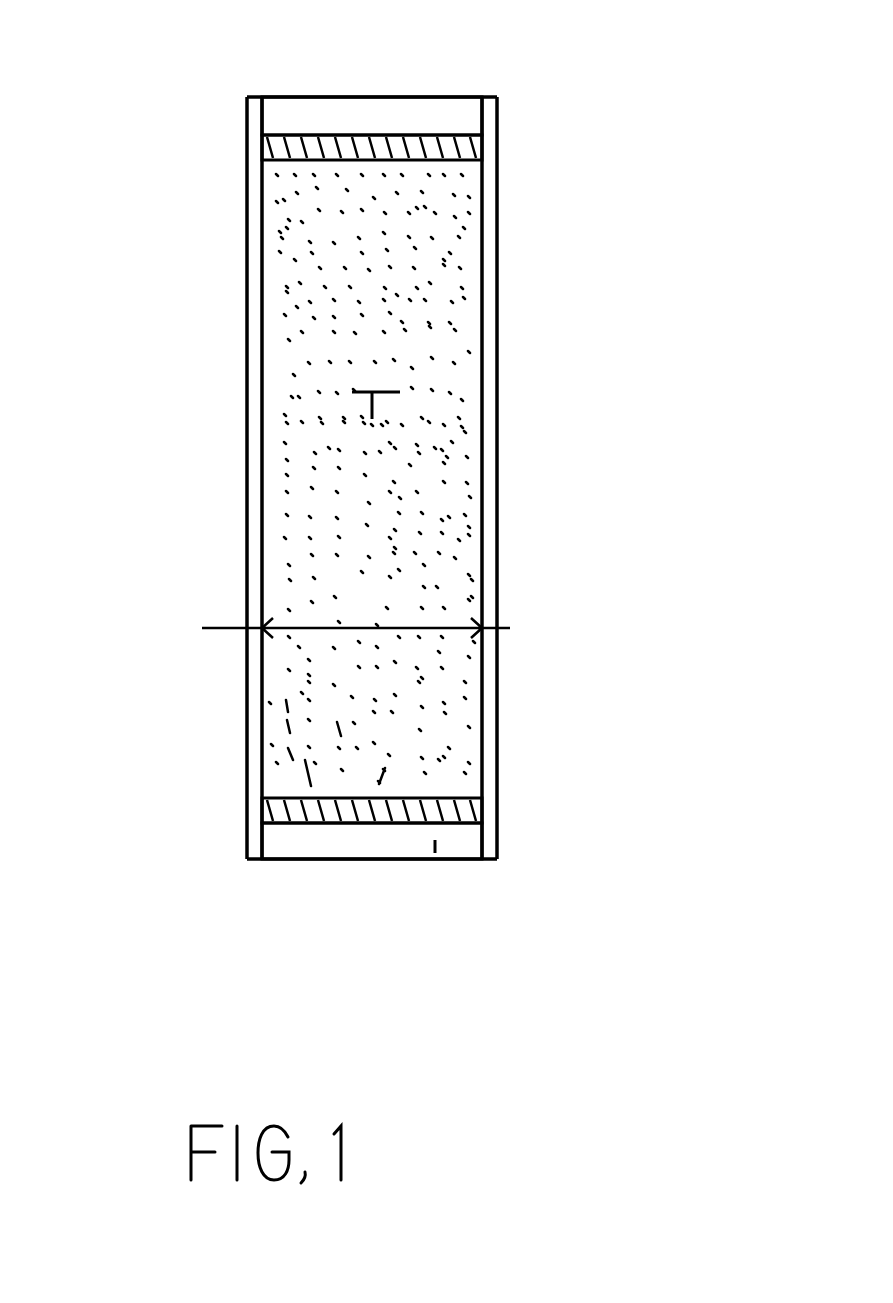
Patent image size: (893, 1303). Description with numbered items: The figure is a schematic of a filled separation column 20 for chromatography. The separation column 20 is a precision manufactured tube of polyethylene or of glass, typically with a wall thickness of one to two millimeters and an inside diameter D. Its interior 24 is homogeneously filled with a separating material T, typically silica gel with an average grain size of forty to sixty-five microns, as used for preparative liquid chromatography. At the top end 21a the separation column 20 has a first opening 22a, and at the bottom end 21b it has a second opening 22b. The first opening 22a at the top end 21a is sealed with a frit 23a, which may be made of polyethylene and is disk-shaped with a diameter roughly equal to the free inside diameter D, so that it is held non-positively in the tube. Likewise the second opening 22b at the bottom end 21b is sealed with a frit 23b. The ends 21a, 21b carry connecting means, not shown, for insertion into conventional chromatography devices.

The separation column 20 is at (250, 482).
The top end 21a is at (280, 97).
The bottom end 21b is at (282, 860).
The first opening 22a is at (383, 110).
The second opening 22b is at (440, 862).
The frit 23a is at (465, 145).
The frit 23b is at (467, 808).
The interior 24 is at (462, 326).